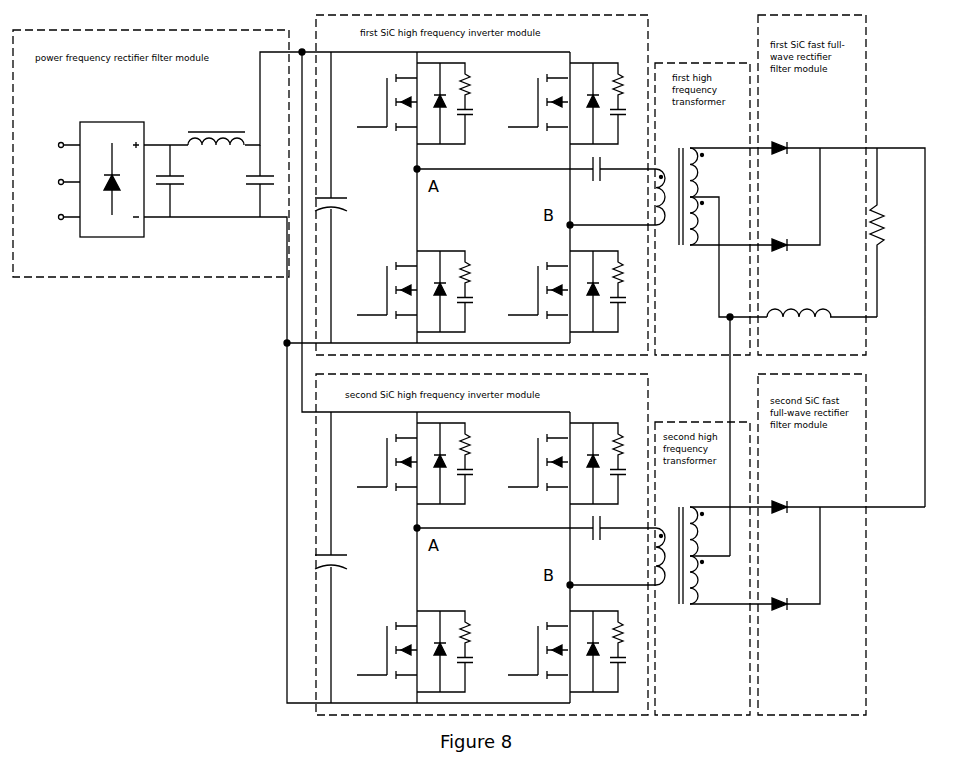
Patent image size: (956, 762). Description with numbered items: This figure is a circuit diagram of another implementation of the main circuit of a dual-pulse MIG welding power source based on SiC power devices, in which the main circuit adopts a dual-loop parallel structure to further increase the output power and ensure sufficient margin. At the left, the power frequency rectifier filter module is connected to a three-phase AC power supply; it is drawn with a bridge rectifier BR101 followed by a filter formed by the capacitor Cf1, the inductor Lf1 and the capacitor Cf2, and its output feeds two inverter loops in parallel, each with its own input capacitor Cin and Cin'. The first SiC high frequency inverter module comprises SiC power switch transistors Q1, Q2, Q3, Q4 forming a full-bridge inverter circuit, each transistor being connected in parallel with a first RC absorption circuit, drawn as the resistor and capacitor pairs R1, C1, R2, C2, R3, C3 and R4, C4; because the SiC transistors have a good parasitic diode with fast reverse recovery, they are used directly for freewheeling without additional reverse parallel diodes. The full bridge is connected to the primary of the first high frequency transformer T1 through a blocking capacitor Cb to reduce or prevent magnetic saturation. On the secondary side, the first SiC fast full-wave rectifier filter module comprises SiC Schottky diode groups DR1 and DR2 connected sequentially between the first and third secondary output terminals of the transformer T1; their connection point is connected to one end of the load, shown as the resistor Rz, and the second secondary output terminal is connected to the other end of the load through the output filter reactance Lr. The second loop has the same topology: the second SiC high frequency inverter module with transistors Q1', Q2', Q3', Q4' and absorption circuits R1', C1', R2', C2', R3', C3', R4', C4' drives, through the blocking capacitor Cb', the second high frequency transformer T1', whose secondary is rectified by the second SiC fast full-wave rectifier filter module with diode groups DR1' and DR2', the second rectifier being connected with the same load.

The bridge rectifier BR101 is at (112, 168).
The filter inductor Lf1 is at (216, 127).
The filter capacitor Cf1 is at (176, 170).
The filter capacitor Cf2 is at (251, 169).
The input capacitor of first inverter Cin is at (346, 204).
The input capacitor of second inverter Cin' is at (348, 563).
The SiC power switch transistor Q1 is at (385, 102).
The SiC power switch transistor Q2 is at (537, 102).
The SiC power switch transistor Q3 is at (385, 290).
The SiC power switch transistor Q4 is at (537, 290).
The snubber resistor R1 is at (477, 84).
The snubber resistor R2 is at (629, 82).
The snubber resistor R3 is at (477, 272).
The snubber resistor R4 is at (627, 265).
The snubber capacitor C1 is at (476, 125).
The snubber capacitor C2 is at (627, 125).
The snubber capacitor C3 is at (476, 314).
The snubber capacitor C4 is at (626, 314).
The blocking capacitor Cb is at (596, 183).
The SiC MOSFET switch of second inverter Q1' is at (385, 462).
The SiC MOSFET switch of second inverter Q2' is at (537, 462).
The SiC MOSFET switch of second inverter Q3' is at (385, 650).
The SiC MOSFET switch of second inverter Q4' is at (537, 650).
The snubber resistor of second inverter R1' is at (479, 444).
The snubber resistor of second inverter R2' is at (631, 442).
The snubber resistor of second inverter R3' is at (479, 632).
The snubber resistor of second inverter R4' is at (629, 625).
The snubber capacitor of second inverter C1' is at (478, 485).
The snubber capacitor of second inverter C2' is at (629, 485).
The snubber capacitor of second inverter C3' is at (478, 674).
The snubber capacitor of second inverter C4' is at (628, 674).
The blocking capacitor of second inverter Cb' is at (598, 542).
The first high frequency transformer T1 is at (680, 180).
The second high frequency transformer T1' is at (682, 539).
The SiC Schottky diode group DR1 is at (779, 135).
The SiC Schottky diode group DR2 is at (775, 265).
The fast rectifier diode of second rectifier DR1' is at (781, 494).
The fast rectifier diode of second rectifier DR2' is at (777, 624).
The load resistor Rz is at (890, 225).
The output filter reactance Lr is at (799, 327).